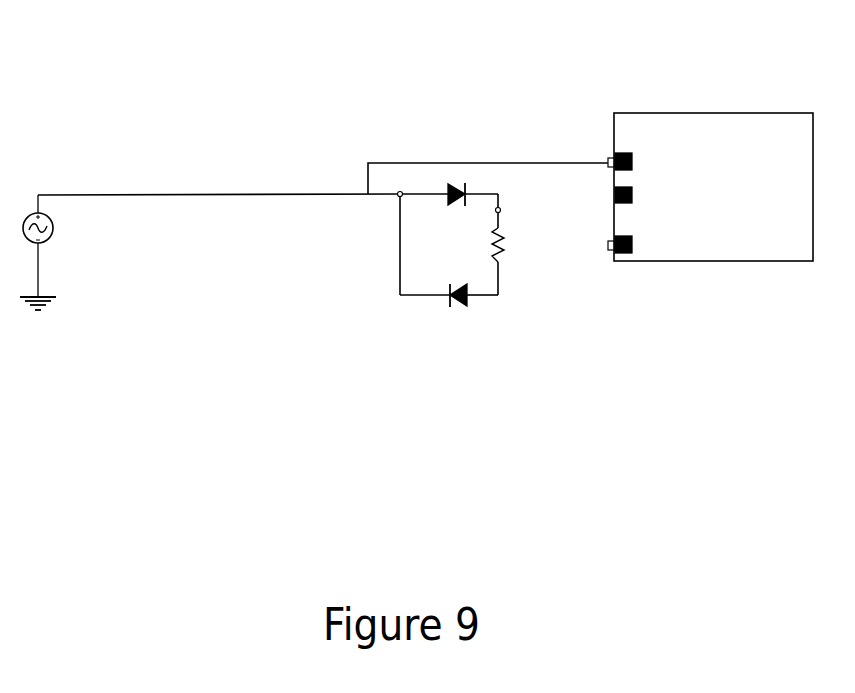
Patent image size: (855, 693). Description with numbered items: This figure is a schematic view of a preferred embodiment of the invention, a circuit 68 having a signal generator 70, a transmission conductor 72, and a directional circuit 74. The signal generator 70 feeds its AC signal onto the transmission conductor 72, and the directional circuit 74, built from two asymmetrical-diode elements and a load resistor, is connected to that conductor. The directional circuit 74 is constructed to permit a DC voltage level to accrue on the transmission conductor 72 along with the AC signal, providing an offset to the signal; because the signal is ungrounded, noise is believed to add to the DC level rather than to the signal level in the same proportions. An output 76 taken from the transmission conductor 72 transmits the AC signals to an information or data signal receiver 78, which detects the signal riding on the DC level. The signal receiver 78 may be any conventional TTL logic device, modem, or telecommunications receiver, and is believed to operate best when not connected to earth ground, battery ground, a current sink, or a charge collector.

The circuit 68 is at (431, 325).
The signal generator 70 is at (40, 196).
The transmission conductor 72 is at (217, 196).
The directional circuit 74 is at (500, 285).
The output 76 is at (500, 163).
The signal receiver 78 is at (713, 250).